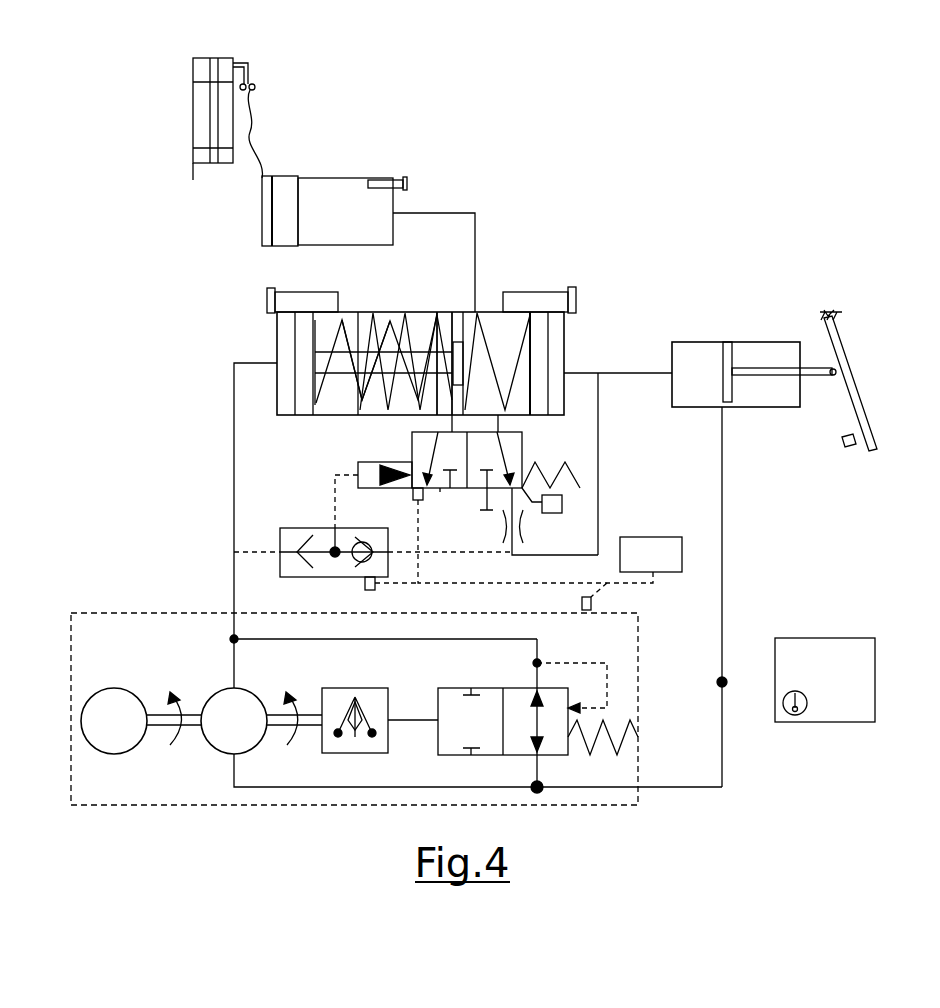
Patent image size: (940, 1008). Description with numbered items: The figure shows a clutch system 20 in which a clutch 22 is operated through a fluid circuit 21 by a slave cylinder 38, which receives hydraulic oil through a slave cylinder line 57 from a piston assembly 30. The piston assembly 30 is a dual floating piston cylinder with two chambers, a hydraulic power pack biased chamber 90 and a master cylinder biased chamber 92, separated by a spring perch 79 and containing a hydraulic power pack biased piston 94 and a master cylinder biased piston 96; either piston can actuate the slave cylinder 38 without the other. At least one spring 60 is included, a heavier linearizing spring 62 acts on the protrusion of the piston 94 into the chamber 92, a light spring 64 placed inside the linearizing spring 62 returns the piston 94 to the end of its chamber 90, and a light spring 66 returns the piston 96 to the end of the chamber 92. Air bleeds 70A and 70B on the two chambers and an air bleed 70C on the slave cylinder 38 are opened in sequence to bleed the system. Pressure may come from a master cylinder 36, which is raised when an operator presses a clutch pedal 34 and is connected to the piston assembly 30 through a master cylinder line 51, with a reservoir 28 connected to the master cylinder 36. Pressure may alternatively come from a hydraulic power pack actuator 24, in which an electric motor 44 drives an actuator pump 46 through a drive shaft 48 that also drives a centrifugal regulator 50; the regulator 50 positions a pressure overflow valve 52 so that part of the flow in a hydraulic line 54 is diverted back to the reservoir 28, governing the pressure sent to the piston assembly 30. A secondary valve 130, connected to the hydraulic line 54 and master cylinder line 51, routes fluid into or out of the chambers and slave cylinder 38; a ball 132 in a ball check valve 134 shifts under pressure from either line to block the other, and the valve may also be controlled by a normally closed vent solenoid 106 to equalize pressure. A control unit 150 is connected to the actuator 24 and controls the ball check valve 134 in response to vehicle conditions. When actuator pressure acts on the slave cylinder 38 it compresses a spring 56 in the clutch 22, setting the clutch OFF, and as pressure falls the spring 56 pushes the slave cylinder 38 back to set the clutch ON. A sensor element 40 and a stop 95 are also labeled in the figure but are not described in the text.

The clutch system 20 is at (709, 230).
The fluid circuit 21 is at (627, 374).
The clutch 22 is at (206, 58).
The hydraulic power pack actuator 24 is at (71, 665).
The reservoir 28 is at (875, 648).
The piston assembly 30 is at (290, 416).
The clutch pedal 34 is at (858, 386).
The master cylinder 36 is at (705, 342).
The slave cylinder 38 is at (273, 177).
The sensor 40 is at (418, 500).
The electric motor 44 is at (81, 720).
The actuator pump 46 is at (210, 700).
The drive shaft 48 is at (158, 712).
The centrifugal regulator 50 is at (368, 688).
The master cylinder line 51 is at (586, 374).
The pressure overflow valve 52 is at (481, 688).
The hydraulic line 54 is at (234, 586).
The spring 56 is at (250, 106).
The slave cylinder line 57 is at (472, 212).
The spring 60 is at (340, 322).
The linearizing spring 62 is at (396, 402).
The hydraulic power pack biased chamber light spring 64 is at (370, 400).
The master cylinder biased chamber light spring 66 is at (454, 409).
The air bleed 70A is at (268, 290).
The air bleed 70B is at (569, 288).
The air bleed 70C is at (405, 177).
The spring perch 79 is at (446, 312).
The hydraulic power pack biased chamber 90 is at (420, 312).
The master cylinder biased chamber 92 is at (492, 312).
The hydraulic power pack biased piston 94 is at (340, 368).
The stop 95 is at (455, 342).
The master cylinder biased piston 96 is at (540, 415).
The vent solenoid 106 is at (555, 514).
The secondary valve 130 is at (440, 489).
The ball 132 is at (358, 533).
The ball check valve 134 is at (297, 528).
The control unit 150 is at (651, 554).